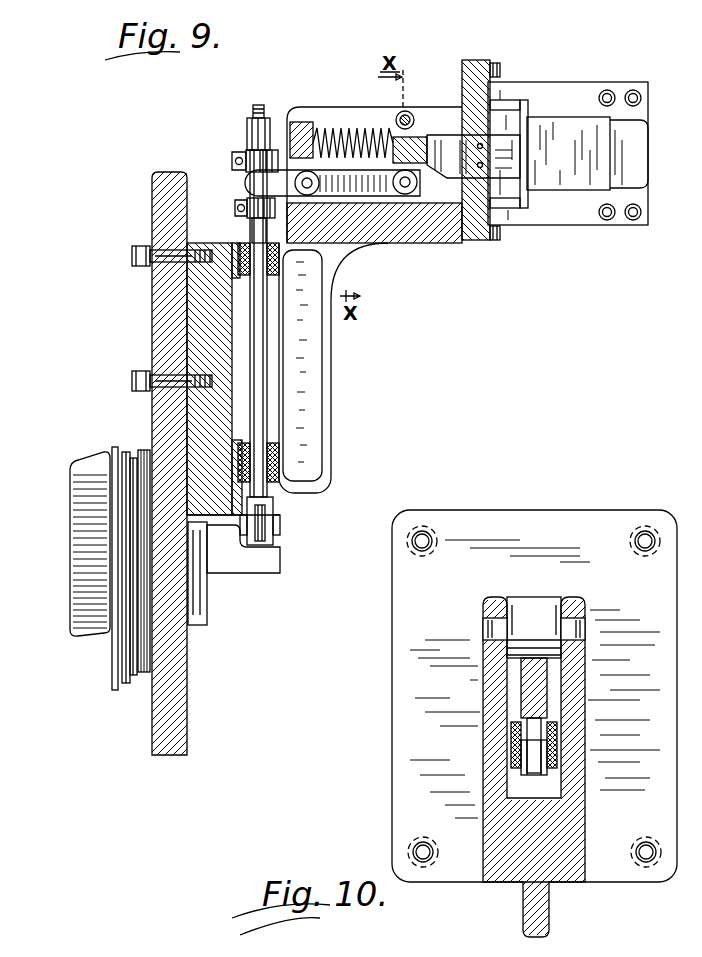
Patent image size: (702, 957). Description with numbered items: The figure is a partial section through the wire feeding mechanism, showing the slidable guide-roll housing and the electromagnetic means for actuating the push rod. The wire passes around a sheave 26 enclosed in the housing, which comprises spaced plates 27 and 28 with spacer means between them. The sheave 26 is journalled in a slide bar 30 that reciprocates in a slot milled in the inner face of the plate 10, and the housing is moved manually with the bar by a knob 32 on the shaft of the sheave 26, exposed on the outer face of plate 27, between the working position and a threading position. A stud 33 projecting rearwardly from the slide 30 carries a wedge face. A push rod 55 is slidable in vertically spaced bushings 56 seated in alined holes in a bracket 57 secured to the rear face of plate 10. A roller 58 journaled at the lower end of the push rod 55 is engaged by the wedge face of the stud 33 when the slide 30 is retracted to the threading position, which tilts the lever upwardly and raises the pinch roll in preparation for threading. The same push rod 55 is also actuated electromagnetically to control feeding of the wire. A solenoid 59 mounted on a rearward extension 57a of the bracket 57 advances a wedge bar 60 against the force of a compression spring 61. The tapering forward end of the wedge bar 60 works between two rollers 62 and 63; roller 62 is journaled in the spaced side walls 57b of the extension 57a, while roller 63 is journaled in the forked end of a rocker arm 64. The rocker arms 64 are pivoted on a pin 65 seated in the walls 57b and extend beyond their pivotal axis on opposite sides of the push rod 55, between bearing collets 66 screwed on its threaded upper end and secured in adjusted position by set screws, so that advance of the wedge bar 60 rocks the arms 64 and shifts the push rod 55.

In FIG. 9, the plate 10 is at (178, 713).
In FIG. 9, the sheave 26 is at (127, 660).
In FIG. 9, the plate 27 is at (110, 455).
In FIG. 9, the plate 28 is at (145, 673).
In FIG. 9, the slide bar 30 is at (207, 600).
In FIG. 9, the knob 32 is at (64, 628).
In FIG. 9, the stud 33 is at (262, 585).
In FIG. 9, the push rod 55 is at (265, 382).
In FIG. 9, the bushings 56 is at (271, 268).
In FIG. 9, the bracket 57 is at (306, 432).
In FIG. 9, the rearward extension 57a is at (450, 242).
In FIG. 10, the rearward extension 57a is at (585, 836).
In FIG. 9, the side walls 57b is at (338, 112).
In FIG. 10, the side walls 57b is at (483, 655).
In FIG. 9, the roller 58 is at (262, 521).
In FIG. 9, the solenoid 59 is at (552, 122).
In FIG. 9, the wedge bar 60 is at (445, 138).
In FIG. 10, the wedge bar 60 is at (521, 684).
In FIG. 9, the compression spring 61 is at (336, 128).
In FIG. 9, the roller 62 is at (408, 115).
In FIG. 10, the roller 62 is at (548, 597).
In FIG. 9, the roller 63 is at (404, 195).
In FIG. 10, the roller 63 is at (530, 776).
In FIG. 9, the rocker arm 64 is at (366, 172).
In FIG. 10, the rocker arm 64 is at (511, 732).
In FIG. 9, the pin 65 is at (310, 196).
In FIG. 9, the bearing collets 66 is at (266, 150).